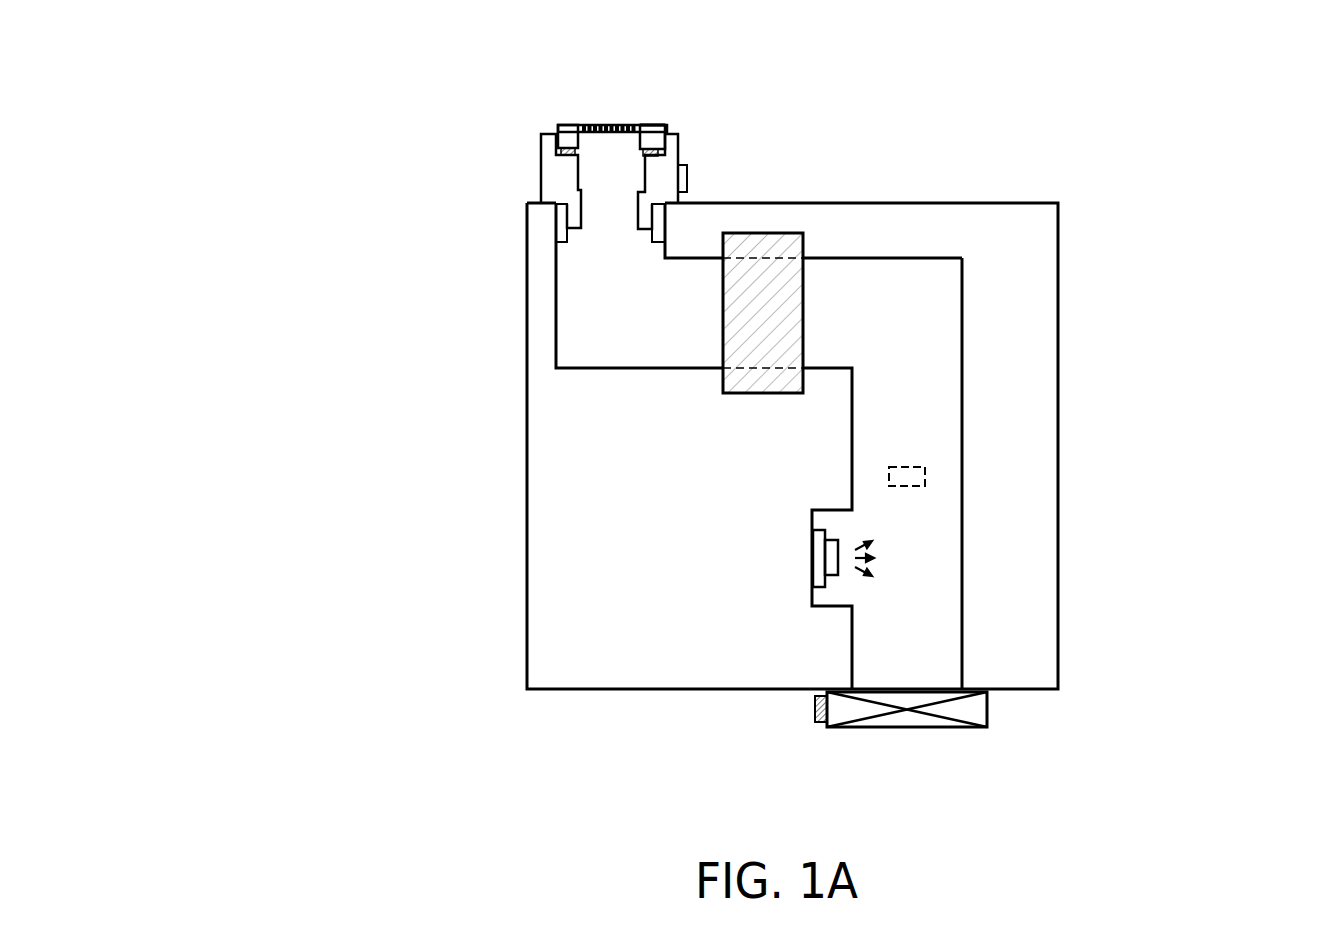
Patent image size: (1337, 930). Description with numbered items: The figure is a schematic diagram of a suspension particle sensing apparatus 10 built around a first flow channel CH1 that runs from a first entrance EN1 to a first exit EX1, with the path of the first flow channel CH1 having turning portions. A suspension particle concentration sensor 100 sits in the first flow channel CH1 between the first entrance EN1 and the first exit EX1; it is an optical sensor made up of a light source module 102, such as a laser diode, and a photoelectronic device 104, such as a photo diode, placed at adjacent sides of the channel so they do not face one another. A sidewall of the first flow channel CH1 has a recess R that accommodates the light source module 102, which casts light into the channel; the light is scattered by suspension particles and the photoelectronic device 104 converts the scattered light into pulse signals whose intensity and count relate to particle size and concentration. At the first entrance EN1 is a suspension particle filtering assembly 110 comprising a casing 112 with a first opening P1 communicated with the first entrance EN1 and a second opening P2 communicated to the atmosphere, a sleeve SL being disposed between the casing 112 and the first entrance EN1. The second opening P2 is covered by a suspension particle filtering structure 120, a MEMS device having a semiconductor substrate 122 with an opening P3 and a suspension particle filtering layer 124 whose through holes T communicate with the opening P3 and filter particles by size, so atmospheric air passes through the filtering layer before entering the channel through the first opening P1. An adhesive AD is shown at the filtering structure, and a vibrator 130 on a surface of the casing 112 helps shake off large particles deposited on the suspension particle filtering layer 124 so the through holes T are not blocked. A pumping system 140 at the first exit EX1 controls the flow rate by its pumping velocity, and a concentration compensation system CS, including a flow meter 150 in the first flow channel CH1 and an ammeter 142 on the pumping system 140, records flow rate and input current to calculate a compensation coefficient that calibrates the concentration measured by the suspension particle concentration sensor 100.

The suspension particle sensing apparatus 10 is at (1313, 805).
The suspension particle concentration sensor 100 is at (180, 188).
The light source module 102 is at (813, 557).
The photoelectronic device 104 is at (925, 481).
The suspension particle filtering assembly 110 is at (526, 98).
The casing 112 is at (549, 158).
The suspension particle filtering structure 120 is at (767, 70).
The semiconductor substrate 122 is at (656, 140).
The suspension particle filtering layer 124 is at (650, 128).
The vibrator 130 is at (687, 176).
The pumping system 140 is at (907, 722).
The ammeter 142 is at (816, 712).
The flow meter 150 is at (790, 247).
The concentration compensation system CS is at (180, 65).
The first flow channel CH1 is at (964, 292).
The first exit EX1 is at (912, 670).
The first entrance EN1 is at (586, 231).
The sleeve SL is at (560, 216).
The recess R is at (833, 512).
The through holes T is at (607, 114).
The adhesive AD is at (636, 128).
The first opening P1 is at (593, 204).
The second opening P2 is at (593, 147).
The opening P3 is at (628, 147).